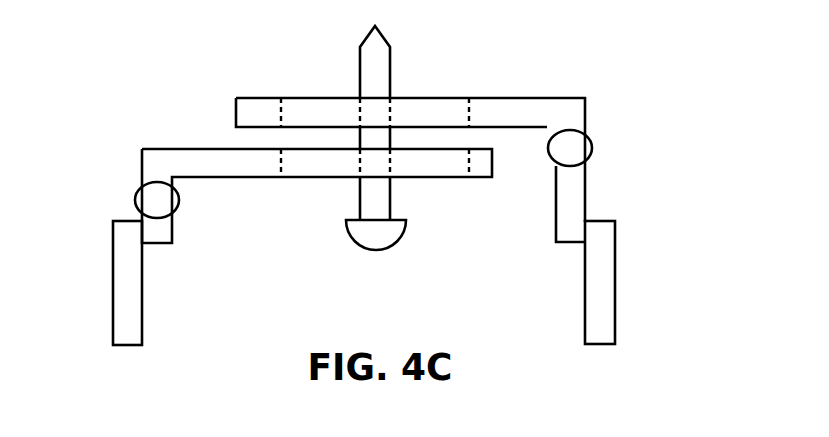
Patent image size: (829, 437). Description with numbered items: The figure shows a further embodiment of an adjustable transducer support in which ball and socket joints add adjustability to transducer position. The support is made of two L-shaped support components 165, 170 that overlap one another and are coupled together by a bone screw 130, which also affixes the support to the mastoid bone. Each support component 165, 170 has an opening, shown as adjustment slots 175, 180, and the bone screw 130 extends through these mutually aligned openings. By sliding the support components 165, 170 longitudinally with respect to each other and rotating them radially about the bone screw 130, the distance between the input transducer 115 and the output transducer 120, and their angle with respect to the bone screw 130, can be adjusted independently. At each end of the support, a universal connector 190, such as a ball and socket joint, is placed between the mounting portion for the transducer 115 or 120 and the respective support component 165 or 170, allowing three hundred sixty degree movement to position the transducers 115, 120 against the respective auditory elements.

The input transducer 115 is at (113, 304).
The output transducer 120 is at (616, 298).
The bone screw 130 is at (360, 61).
The support component 165 is at (248, 178).
The support component 170 is at (527, 98).
The adjustment slot 175 is at (468, 165).
The adjustment slot 180 is at (468, 112).
The universal connector 190 is at (592, 148).